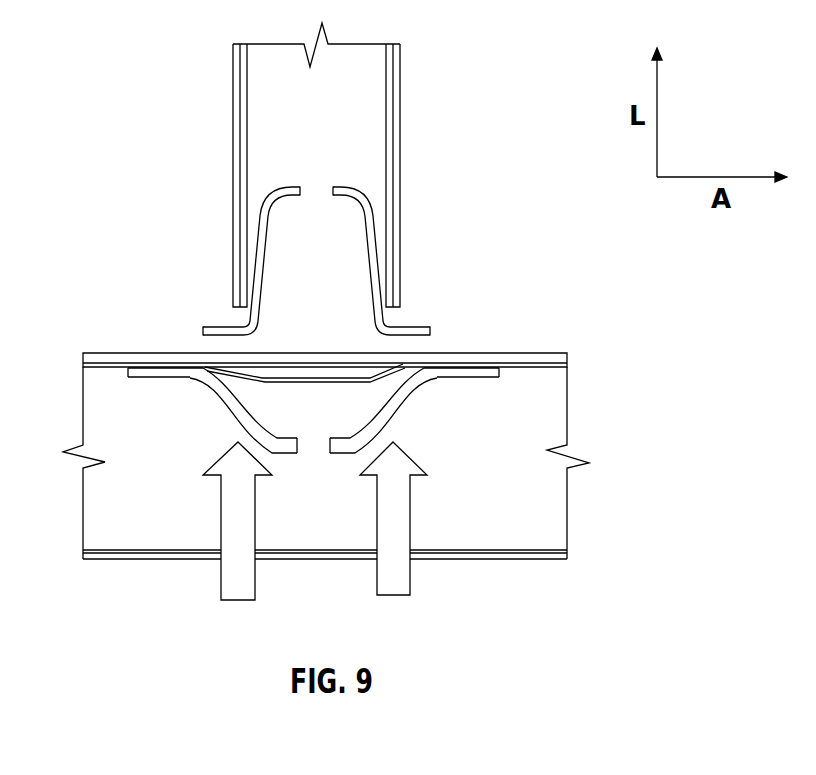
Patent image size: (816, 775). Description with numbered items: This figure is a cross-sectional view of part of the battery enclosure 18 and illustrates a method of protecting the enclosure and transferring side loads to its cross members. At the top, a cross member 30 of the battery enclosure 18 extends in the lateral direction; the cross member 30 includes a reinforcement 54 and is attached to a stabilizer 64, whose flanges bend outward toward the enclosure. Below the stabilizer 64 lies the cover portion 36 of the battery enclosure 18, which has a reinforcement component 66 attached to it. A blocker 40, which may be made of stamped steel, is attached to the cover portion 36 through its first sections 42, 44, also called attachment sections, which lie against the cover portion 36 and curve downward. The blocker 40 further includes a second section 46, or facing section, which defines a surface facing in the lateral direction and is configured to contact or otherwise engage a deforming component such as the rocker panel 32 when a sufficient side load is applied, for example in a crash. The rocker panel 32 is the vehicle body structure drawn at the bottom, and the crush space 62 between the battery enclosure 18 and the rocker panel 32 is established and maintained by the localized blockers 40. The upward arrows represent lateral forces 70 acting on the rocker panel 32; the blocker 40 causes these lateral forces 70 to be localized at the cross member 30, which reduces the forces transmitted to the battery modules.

The battery enclosure 18 is at (557, 368).
The cross member 30 is at (355, 165).
The rocker panel 32 is at (157, 550).
The cover portion 36 is at (182, 446).
The blocker 40 is at (410, 415).
The first section 42 is at (425, 411).
The first section 44 is at (239, 446).
The second section 46 is at (287, 457).
The reinforcement 54 is at (400, 148).
The crush space 62 is at (485, 472).
The stabilizer 64 is at (390, 327).
The reinforcement component 66 is at (108, 353).
The lateral forces 70 is at (255, 585).